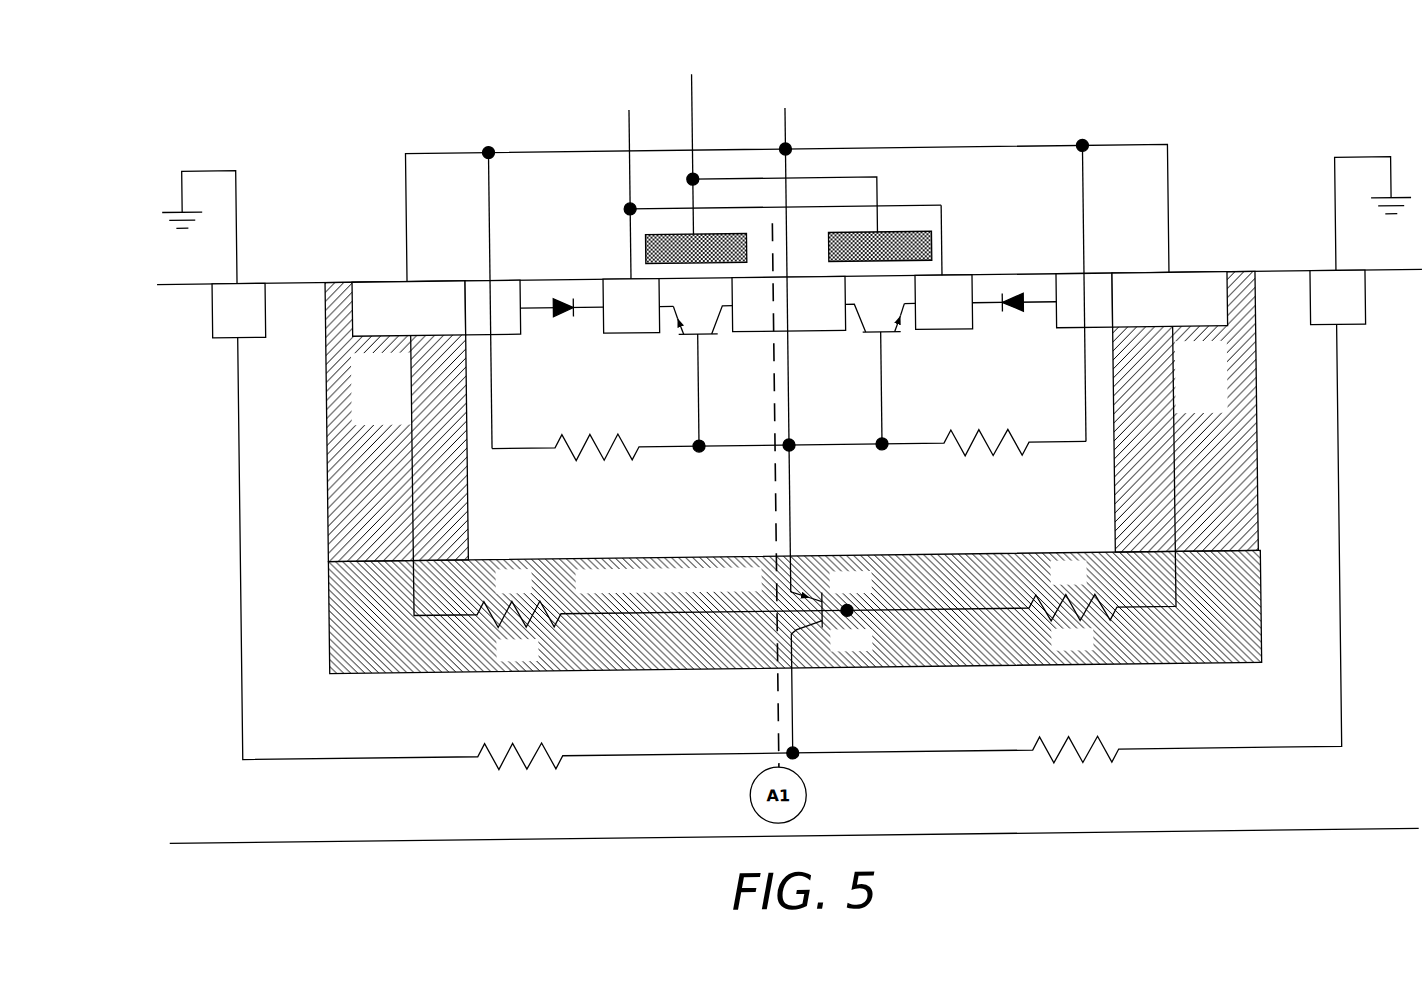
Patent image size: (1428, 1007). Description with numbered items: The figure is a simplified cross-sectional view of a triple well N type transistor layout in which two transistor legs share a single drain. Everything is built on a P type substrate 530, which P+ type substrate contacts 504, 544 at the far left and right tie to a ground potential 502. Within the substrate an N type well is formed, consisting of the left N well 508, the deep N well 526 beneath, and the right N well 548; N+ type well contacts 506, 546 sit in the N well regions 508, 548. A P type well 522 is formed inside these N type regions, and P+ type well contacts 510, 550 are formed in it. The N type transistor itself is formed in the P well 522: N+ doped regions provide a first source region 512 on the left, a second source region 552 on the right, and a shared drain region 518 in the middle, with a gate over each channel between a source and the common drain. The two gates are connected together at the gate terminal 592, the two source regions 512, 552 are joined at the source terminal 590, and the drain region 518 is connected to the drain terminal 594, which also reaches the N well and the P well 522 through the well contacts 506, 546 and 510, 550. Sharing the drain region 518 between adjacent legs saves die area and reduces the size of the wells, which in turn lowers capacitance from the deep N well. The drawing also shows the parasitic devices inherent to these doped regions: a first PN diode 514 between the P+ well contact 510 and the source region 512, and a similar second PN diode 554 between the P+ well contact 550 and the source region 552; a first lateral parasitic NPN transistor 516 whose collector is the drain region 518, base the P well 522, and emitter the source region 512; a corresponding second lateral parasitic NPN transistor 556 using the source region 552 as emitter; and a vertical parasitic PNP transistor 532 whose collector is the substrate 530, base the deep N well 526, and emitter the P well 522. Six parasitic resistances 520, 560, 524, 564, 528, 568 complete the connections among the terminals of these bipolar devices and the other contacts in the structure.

The ground potential 502 is at (199, 145).
The P+ type substrate contact 504 is at (223, 336).
The N+ type well contact 506 is at (390, 273).
The N well 508 is at (396, 421).
The P+ type well contact 510 is at (508, 275).
The N+ source region 512 is at (615, 276).
The PN diode D1 514 is at (562, 334).
The lateral parasitic NPN transistor Q1 516 is at (695, 376).
The shared N+ drain region 518 is at (790, 335).
The parasitic resistance R1 520 is at (596, 447).
The P type well 522 is at (791, 443).
The parasitic resistance R3 524 is at (617, 497).
The deep N well 526 is at (794, 611).
The parasitic resistance R5 528 is at (516, 565).
The P type substrate 530 is at (792, 556).
The vertical parasitic PNP transistor Q2 532 is at (831, 598).
The P+ type substrate contact 544 is at (1353, 334).
The N+ type well contact 546 is at (1185, 276).
The N well 548 is at (1185, 411).
The P+ type well contact 550 is at (1068, 275).
The N+ source region 552 is at (961, 276).
The PN diode D2 554 is at (1014, 329).
The lateral parasitic NPN transistor Q0 556 is at (934, 318).
The parasitic resistance R2 560 is at (984, 442).
The parasitic resistance R4 564 is at (1010, 489).
The parasitic resistance R6 568 is at (1065, 557).
The source terminal 590 is at (768, 167).
The gate terminal 592 is at (787, 142).
The drain terminal 594 is at (785, 252).